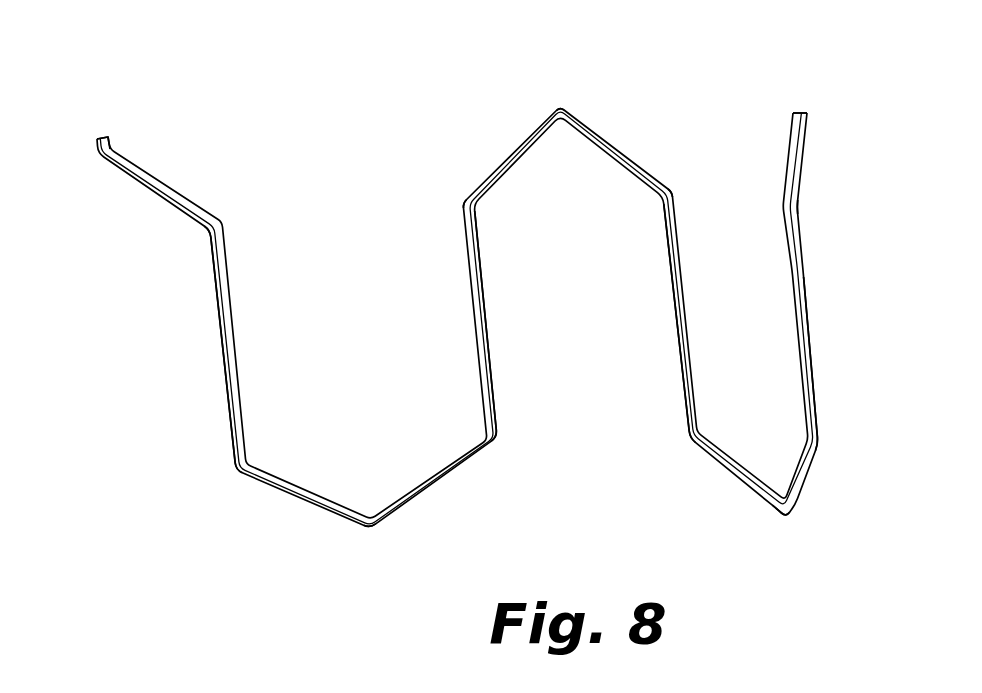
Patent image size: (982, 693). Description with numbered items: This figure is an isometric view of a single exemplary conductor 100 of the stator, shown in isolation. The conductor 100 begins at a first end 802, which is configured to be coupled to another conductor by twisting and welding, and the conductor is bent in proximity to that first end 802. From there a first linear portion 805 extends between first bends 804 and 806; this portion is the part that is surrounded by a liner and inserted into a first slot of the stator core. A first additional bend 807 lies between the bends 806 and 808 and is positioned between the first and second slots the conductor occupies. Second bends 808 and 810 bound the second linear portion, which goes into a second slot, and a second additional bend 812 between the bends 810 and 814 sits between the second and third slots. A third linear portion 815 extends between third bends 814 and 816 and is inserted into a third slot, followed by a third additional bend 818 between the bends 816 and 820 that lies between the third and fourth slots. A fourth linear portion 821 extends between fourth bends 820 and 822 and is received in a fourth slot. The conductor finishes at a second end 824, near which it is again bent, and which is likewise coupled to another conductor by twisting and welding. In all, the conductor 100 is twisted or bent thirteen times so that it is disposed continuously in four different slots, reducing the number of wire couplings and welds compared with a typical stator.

The conductor 100 is at (708, 72).
The first end 802 is at (103, 137).
The first bend 804 is at (218, 228).
The first linear portion 805 is at (228, 469).
The first bend 806 is at (236, 474).
The first additional bend 807 is at (371, 530).
The second bend 808 is at (494, 446).
The second bend 810 is at (465, 203).
The second additional bend 812 is at (567, 104).
The third bend 814 is at (673, 191).
The third linear portion 815 is at (682, 440).
The third bend 816 is at (690, 441).
The third additional bend 818 is at (792, 514).
The fourth bend 820 is at (818, 445).
The fourth linear portion 821 is at (803, 440).
The fourth bend 822 is at (797, 210).
The second end 824 is at (807, 113).